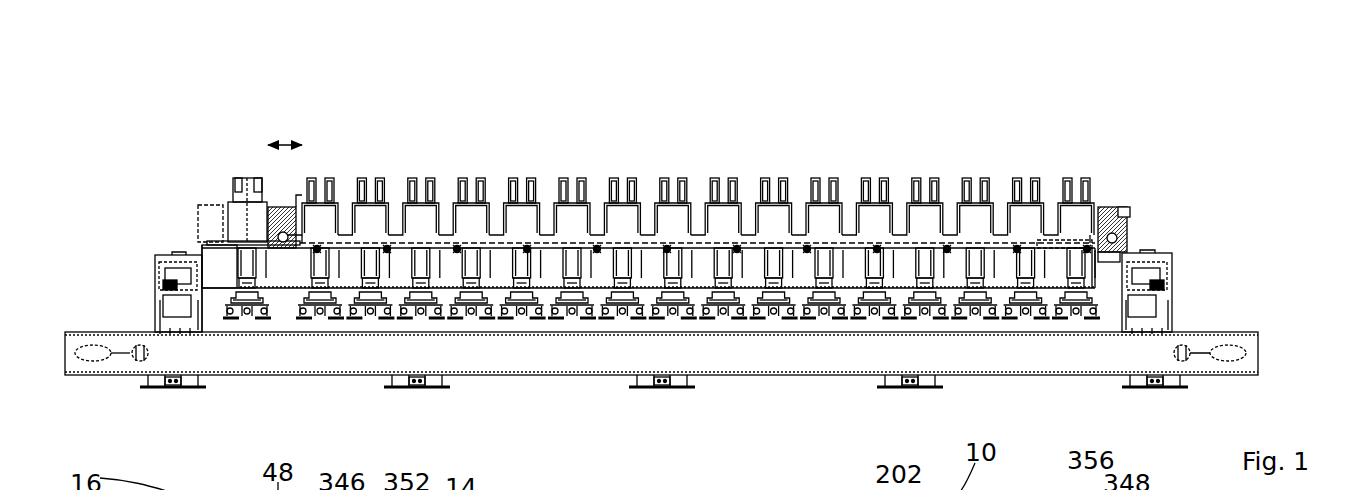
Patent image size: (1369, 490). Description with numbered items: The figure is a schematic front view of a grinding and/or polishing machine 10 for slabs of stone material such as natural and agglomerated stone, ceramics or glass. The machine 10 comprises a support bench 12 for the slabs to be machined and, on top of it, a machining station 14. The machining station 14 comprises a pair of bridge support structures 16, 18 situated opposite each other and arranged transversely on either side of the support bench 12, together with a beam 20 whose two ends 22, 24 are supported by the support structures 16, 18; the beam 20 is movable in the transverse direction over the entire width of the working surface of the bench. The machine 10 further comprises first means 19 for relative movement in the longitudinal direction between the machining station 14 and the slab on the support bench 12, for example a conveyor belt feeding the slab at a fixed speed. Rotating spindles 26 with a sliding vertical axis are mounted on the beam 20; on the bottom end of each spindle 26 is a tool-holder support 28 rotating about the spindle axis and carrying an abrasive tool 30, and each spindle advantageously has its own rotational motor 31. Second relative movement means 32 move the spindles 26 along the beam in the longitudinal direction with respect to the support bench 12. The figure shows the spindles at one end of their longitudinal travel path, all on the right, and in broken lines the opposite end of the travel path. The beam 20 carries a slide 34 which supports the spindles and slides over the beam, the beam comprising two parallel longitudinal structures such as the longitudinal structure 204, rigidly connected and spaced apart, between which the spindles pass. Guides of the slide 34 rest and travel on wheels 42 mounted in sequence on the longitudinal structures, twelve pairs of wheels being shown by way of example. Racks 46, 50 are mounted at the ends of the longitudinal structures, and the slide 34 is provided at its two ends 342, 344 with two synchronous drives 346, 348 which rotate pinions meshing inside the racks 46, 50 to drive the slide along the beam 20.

The grinding and/or polishing machine 10 is at (1182, 168).
The support bench 12 is at (1262, 338).
The machining station 14 is at (562, 169).
The bridge support structure 16 is at (148, 287).
The bridge support structure 18 is at (1170, 286).
The first means for relative movement 19 is at (596, 333).
The beam 20 is at (195, 249).
The end of the beam 22 is at (220, 262).
The end of the beam 24 is at (1110, 262).
The rotating spindle 26 is at (1095, 277).
The tool-holder support 28 is at (232, 294).
The abrasive tool 30 is at (1063, 320).
The rotational motor 31 is at (668, 177).
The second relative movement means 32 is at (1170, 247).
The slide 34 is at (414, 227).
The wheels 42 is at (315, 253).
The rack 46 is at (218, 253).
The rack 50 is at (1077, 245).
The longitudinal structure 204 is at (848, 262).
The end of the slide 342 is at (1103, 201).
The end of the slide 344 is at (298, 196).
The synchronous drive 346 is at (277, 207).
The synchronous drive 348 is at (1127, 213).